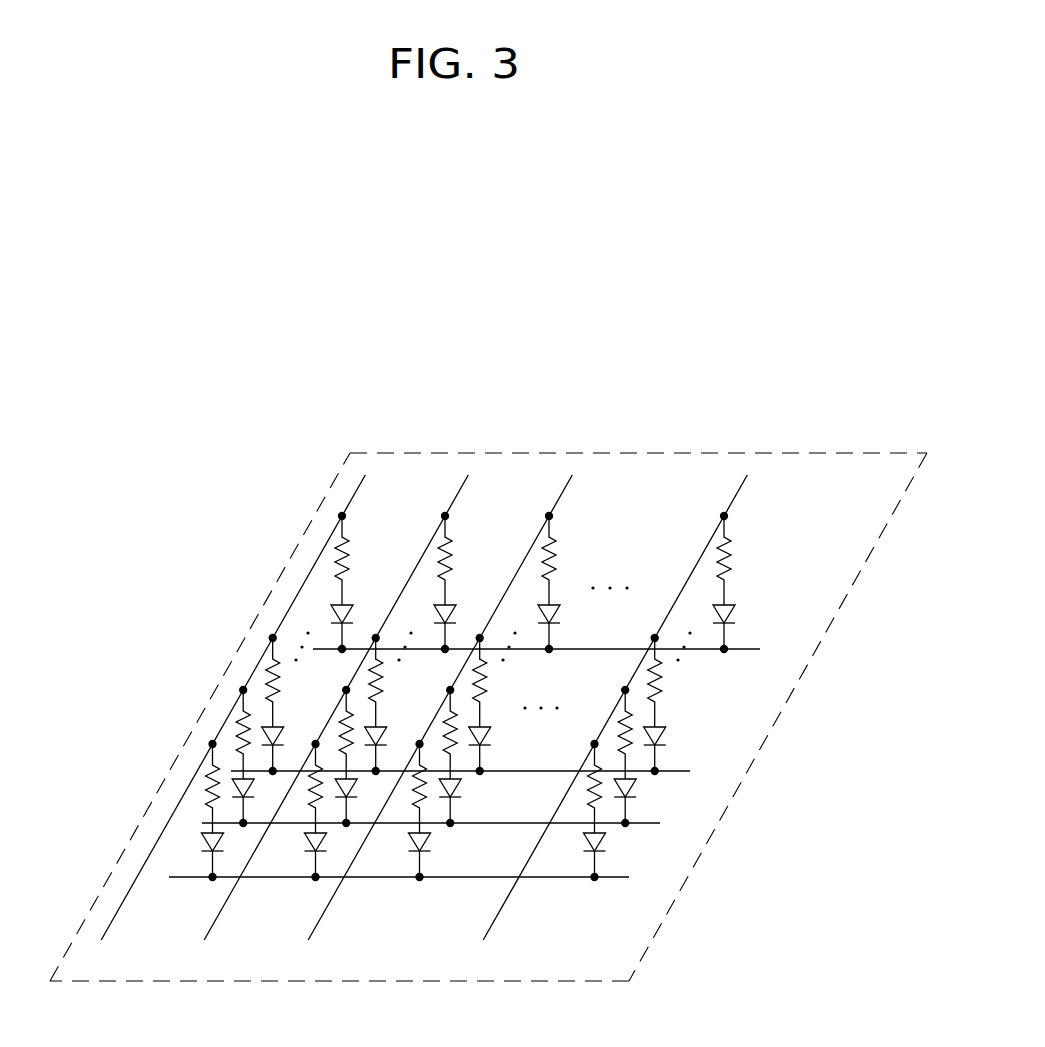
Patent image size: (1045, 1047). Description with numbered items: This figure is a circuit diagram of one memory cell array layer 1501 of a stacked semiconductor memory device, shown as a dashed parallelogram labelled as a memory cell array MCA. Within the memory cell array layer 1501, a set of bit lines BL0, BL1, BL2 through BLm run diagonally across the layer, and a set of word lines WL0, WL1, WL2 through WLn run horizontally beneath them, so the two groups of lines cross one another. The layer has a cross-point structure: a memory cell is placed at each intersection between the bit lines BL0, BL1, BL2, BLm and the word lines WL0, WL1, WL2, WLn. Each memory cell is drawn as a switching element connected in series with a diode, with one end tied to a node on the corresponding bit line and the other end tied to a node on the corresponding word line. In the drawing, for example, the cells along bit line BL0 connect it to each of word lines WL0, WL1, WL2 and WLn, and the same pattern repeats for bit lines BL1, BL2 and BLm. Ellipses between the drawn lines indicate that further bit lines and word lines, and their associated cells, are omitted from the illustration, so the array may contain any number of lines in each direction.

The memory cell array layer 1501 is at (488, 726).
The memory cell array MCA is at (488, 717).
The bit line BL0 is at (222, 723).
The bit line BL1 is at (325, 723).
The bit line BL2 is at (429, 723).
The bit line BLm is at (604, 723).
The word line WL0 is at (421, 878).
The word line WL1 is at (453, 826).
The word line WL2 is at (483, 773).
The word line WLn is at (558, 650).